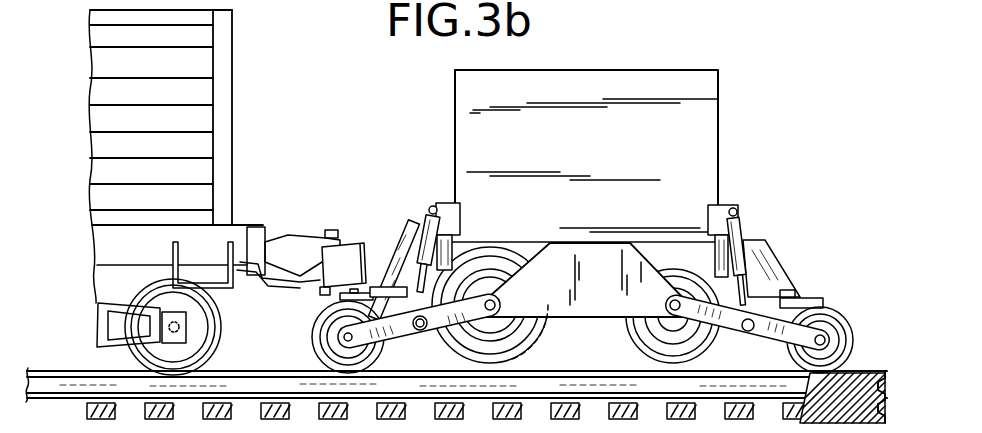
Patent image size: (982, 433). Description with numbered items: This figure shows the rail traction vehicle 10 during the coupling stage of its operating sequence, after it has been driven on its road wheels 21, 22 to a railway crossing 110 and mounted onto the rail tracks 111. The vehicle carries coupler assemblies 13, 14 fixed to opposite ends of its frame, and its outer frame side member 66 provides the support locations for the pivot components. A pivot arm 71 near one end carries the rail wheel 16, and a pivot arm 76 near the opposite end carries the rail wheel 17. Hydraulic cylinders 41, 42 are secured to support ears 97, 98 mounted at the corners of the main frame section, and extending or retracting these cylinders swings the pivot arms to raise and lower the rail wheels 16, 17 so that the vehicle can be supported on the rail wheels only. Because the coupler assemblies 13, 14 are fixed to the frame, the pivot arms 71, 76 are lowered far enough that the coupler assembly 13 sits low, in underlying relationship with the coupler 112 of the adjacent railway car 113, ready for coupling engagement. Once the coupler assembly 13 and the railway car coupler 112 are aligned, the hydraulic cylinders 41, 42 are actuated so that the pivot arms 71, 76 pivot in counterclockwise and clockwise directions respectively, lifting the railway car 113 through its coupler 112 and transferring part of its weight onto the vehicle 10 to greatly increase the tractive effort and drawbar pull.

The rail traction vehicle 10 is at (726, 109).
The coupler assembly 13 is at (417, 267).
The coupler assembly 14 is at (762, 268).
The rail wheel 16 is at (312, 352).
The rail wheel 17 is at (842, 313).
The road wheel 21 is at (497, 263).
The road wheel 22 is at (668, 270).
The hydraulic cylinder 41 is at (423, 230).
The hydraulic cylinder 42 is at (745, 230).
The outer frame side member 66 is at (573, 308).
The pivot arm 71 is at (420, 333).
The pivot arm 76 is at (760, 333).
The support ear 97 is at (445, 205).
The support ear 98 is at (736, 205).
The railway crossing 110 is at (855, 377).
The rail tracks 111 is at (66, 370).
The railway car coupler 112 is at (290, 236).
The railway car 113 is at (232, 40).